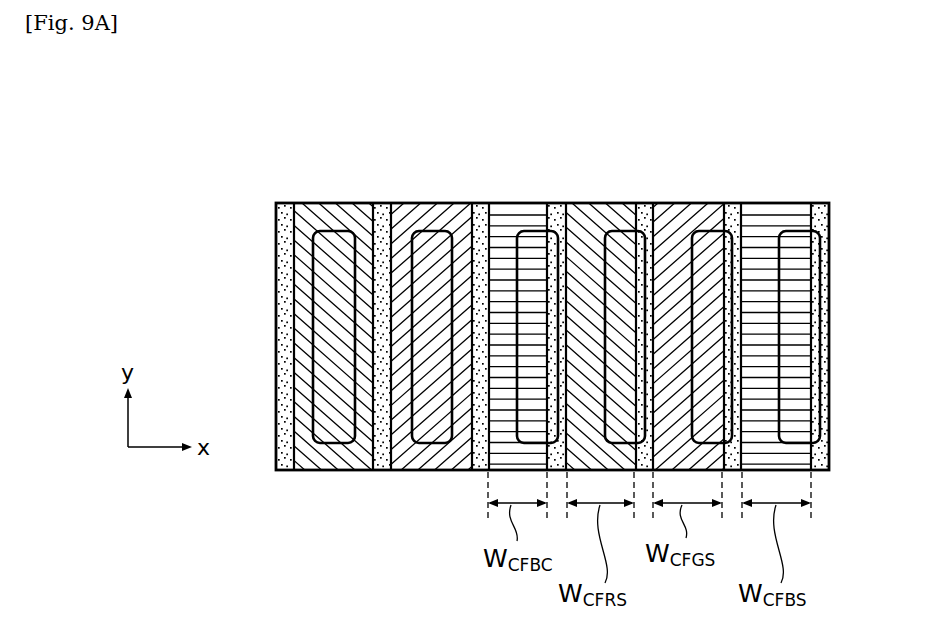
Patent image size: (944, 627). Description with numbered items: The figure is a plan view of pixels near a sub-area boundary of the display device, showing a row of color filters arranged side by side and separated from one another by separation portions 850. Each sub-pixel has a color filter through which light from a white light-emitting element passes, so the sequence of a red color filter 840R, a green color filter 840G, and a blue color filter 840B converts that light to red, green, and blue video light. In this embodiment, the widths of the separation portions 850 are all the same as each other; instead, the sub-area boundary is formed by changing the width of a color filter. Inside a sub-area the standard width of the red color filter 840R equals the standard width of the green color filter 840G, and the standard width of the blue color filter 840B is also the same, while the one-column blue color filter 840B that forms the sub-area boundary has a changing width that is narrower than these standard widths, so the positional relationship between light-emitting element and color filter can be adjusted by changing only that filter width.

The red color filter 840R is at (337, 203).
The green color filter 840G is at (428, 203).
The blue color filter 840B is at (520, 203).
The separation portion 850 is at (818, 203).